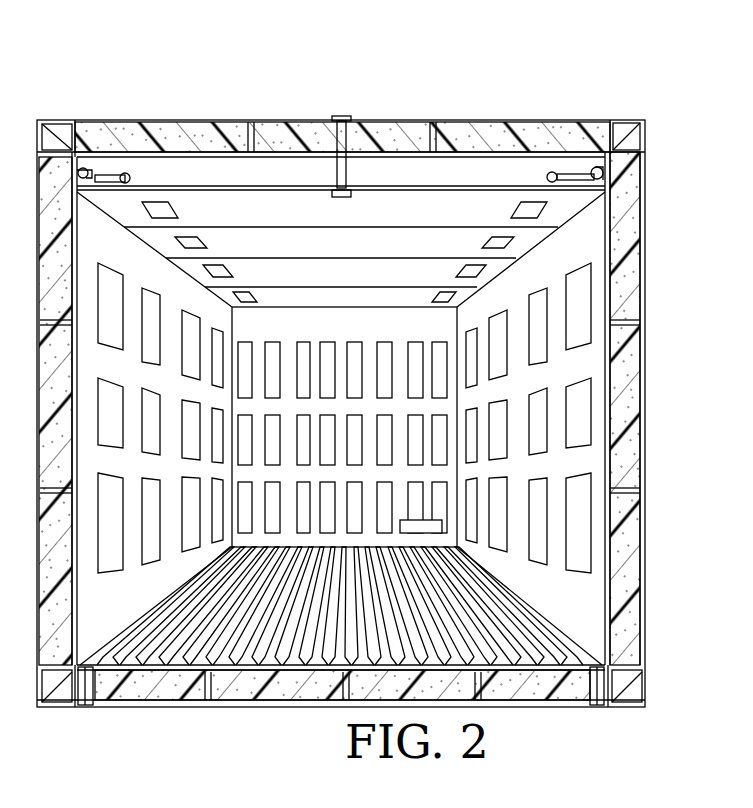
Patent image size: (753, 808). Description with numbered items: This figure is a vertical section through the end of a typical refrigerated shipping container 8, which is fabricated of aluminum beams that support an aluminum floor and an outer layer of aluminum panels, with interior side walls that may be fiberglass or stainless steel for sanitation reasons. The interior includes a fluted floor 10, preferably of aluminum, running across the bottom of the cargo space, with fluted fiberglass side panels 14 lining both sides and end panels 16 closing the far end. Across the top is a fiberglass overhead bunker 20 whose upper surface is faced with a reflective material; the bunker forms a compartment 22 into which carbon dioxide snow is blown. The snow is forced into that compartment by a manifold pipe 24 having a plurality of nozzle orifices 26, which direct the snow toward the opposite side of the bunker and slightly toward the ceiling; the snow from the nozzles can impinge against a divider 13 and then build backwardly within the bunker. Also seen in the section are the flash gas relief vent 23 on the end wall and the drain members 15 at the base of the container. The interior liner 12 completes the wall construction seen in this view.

The container 8 is at (647, 262).
The fluted floor 10 is at (585, 660).
The inner wall liner 12 is at (608, 148).
The divider 13 is at (345, 118).
The fluted fiberglass side panels 14 is at (590, 360).
The drain members 15 is at (86, 703).
The end panels 16 is at (396, 405).
The overhead bunker 20 is at (575, 201).
The compartment 22 is at (192, 173).
The flash gas relief vent 23 is at (443, 528).
The manifold pipe 24 is at (575, 173).
The nozzle orifices 26 is at (555, 168).